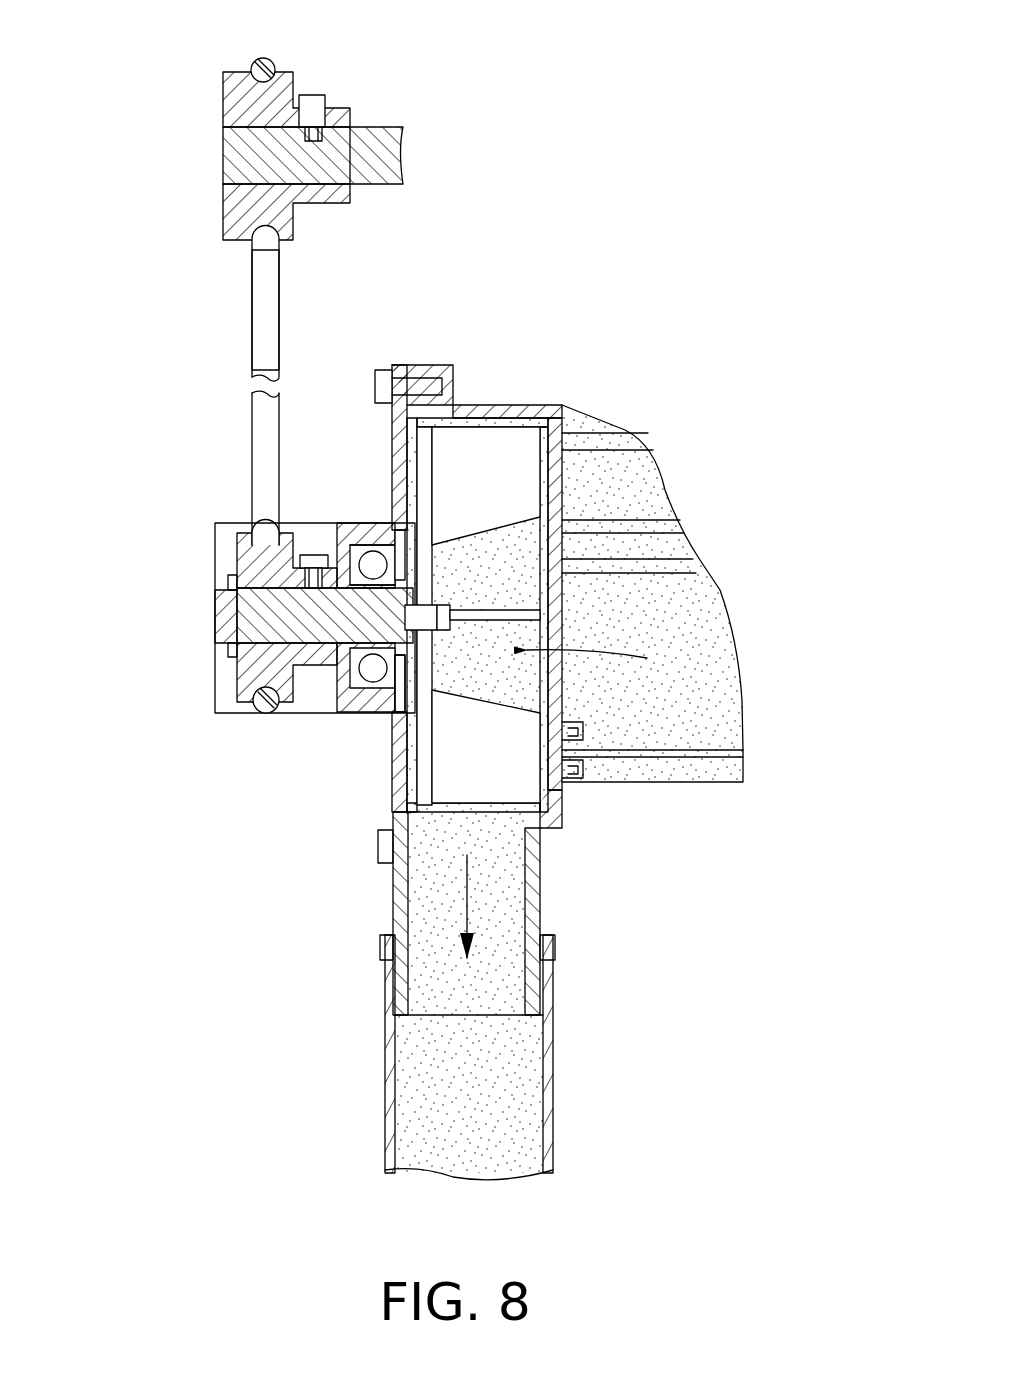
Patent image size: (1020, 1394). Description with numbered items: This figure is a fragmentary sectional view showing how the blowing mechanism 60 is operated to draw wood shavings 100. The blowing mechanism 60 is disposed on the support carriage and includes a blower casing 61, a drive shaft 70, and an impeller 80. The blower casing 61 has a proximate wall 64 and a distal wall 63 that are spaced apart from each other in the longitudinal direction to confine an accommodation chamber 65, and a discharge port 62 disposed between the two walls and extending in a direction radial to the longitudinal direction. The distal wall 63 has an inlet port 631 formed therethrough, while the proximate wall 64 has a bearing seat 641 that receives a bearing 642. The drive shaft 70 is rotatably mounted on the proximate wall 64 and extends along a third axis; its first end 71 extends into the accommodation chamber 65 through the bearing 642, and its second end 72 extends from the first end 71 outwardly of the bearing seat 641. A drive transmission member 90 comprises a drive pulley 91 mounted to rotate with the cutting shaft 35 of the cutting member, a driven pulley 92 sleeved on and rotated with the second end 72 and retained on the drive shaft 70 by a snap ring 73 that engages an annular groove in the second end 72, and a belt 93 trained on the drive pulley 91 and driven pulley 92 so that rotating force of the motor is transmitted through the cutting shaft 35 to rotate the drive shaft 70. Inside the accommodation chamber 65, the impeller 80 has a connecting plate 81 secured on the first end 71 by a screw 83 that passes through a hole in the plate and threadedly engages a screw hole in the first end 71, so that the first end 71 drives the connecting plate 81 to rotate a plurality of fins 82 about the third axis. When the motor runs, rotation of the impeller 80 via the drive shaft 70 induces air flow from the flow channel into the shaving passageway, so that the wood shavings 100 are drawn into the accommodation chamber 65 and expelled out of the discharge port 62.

The cutting shaft 35 is at (375, 137).
The blowing mechanism 60 is at (541, 721).
The blower casing 61 is at (678, 565).
The discharge port 62 is at (540, 902).
The distal wall 63 is at (557, 478).
The inlet port 631 is at (557, 540).
The proximate wall 64 is at (397, 432).
The bearing seat 641 is at (360, 522).
The bearing 642 is at (335, 700).
The accommodation chamber 65 is at (533, 678).
The drive shaft 70 is at (215, 605).
The first end 71 is at (392, 712).
The second end 72 is at (300, 645).
The snap ring 73 is at (262, 640).
The impeller 80 is at (542, 793).
The connecting plate 81 is at (430, 452).
The fins 82 is at (513, 455).
The screw 83 is at (445, 632).
The drive transmission member 90 is at (250, 305).
The drive pulley 91 is at (228, 105).
The driven pulley 92 is at (240, 560).
The belt 93 is at (262, 335).
The wood shavings 100 is at (427, 957).